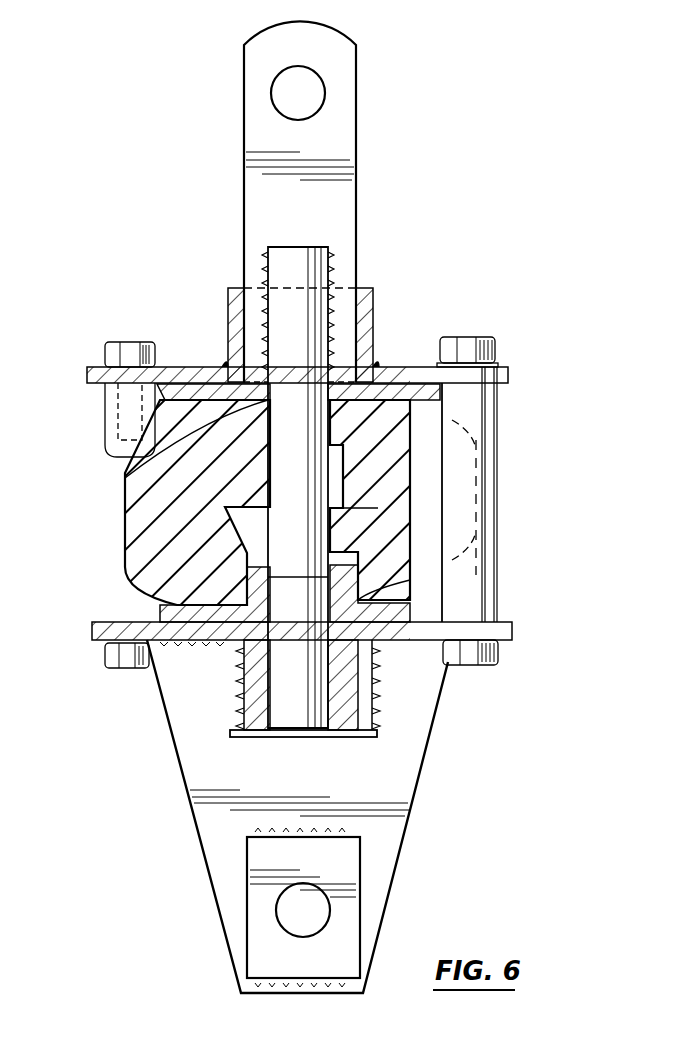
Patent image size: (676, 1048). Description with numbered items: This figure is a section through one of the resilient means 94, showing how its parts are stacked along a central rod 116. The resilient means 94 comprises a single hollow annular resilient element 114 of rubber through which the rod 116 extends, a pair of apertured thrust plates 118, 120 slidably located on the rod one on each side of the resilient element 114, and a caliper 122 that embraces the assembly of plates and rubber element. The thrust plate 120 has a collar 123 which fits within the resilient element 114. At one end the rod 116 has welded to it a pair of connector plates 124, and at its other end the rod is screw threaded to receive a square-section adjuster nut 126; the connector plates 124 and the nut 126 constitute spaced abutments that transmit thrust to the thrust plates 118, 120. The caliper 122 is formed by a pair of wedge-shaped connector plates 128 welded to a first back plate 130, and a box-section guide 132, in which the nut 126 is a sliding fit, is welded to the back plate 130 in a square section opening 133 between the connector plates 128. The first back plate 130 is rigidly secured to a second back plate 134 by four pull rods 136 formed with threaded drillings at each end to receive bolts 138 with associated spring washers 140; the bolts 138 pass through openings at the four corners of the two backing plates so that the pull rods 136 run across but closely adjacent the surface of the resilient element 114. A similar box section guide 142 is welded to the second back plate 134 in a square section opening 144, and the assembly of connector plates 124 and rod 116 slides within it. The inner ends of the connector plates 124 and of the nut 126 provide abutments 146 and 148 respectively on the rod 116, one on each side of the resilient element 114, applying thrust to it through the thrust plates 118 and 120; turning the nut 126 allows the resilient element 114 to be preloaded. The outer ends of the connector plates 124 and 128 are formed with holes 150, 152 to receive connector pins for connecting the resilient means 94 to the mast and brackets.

The resilient means 94 is at (165, 808).
The resilient element 114 is at (430, 447).
The rod 116 is at (267, 263).
The thrust plate 118 is at (380, 393).
The thrust plate 120 is at (435, 612).
The caliper 122 is at (158, 692).
The collar 123 is at (362, 565).
The connector plates 124 is at (357, 108).
The adjuster nut 126 is at (350, 740).
The connector plates 128 is at (393, 840).
The first back plate 130 is at (512, 628).
The box-section guide 132 is at (230, 737).
The square section opening 133 is at (227, 648).
The second back plate 134 is at (90, 367).
The pull rods 136 is at (108, 440).
The bolts 138 is at (130, 342).
The spring washers 140 is at (500, 372).
The box section guide 142 is at (365, 290).
The square section opening 144 is at (228, 362).
The abutment 146 is at (125, 478).
The abutment 148 is at (350, 605).
The hole 150 is at (324, 90).
The hole 152 is at (330, 915).